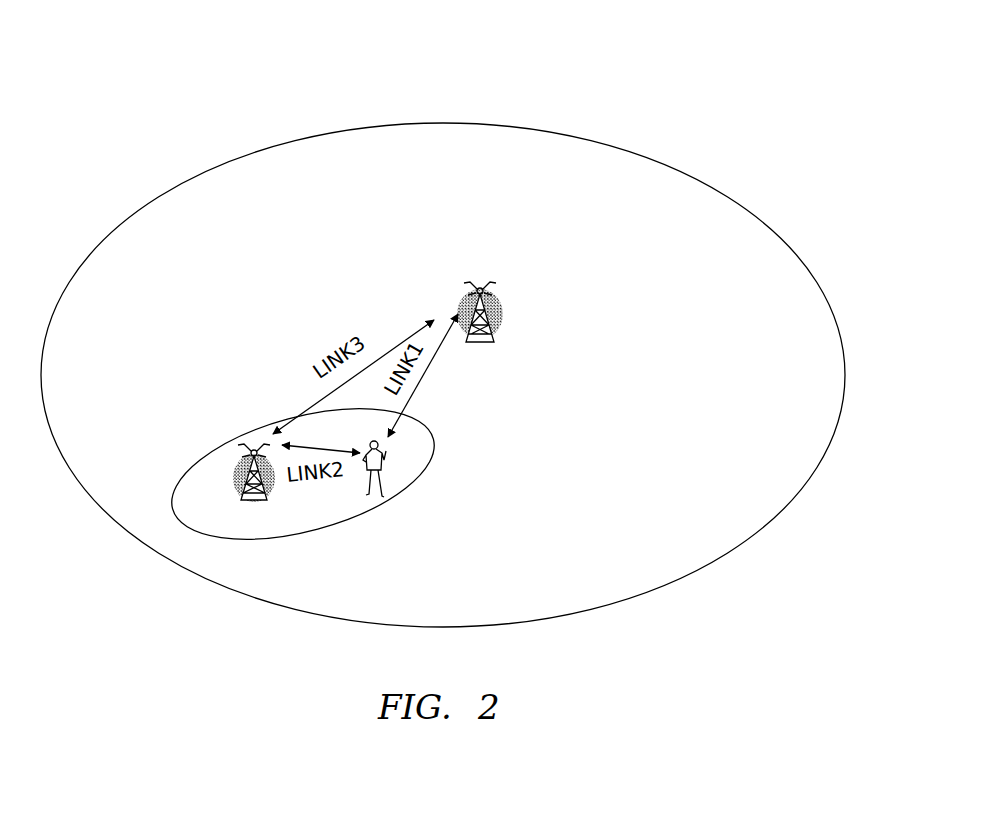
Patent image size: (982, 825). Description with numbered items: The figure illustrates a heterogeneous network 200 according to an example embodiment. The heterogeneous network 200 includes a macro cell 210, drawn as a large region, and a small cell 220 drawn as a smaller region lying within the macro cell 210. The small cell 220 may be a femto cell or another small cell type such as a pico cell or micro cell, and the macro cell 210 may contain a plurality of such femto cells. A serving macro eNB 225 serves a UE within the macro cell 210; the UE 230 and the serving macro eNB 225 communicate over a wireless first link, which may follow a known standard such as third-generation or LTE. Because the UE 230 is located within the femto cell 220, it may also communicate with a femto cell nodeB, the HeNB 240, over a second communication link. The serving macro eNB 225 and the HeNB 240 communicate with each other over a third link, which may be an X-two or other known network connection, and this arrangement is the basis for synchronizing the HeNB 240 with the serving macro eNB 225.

The heterogeneous network 200 is at (671, 82).
The macro cell 210 is at (440, 122).
The small cell 220 is at (322, 530).
The serving macro eNB 225 is at (498, 318).
The UE 230 is at (384, 479).
The femto cell nodeB (HeNB) 240 is at (244, 452).